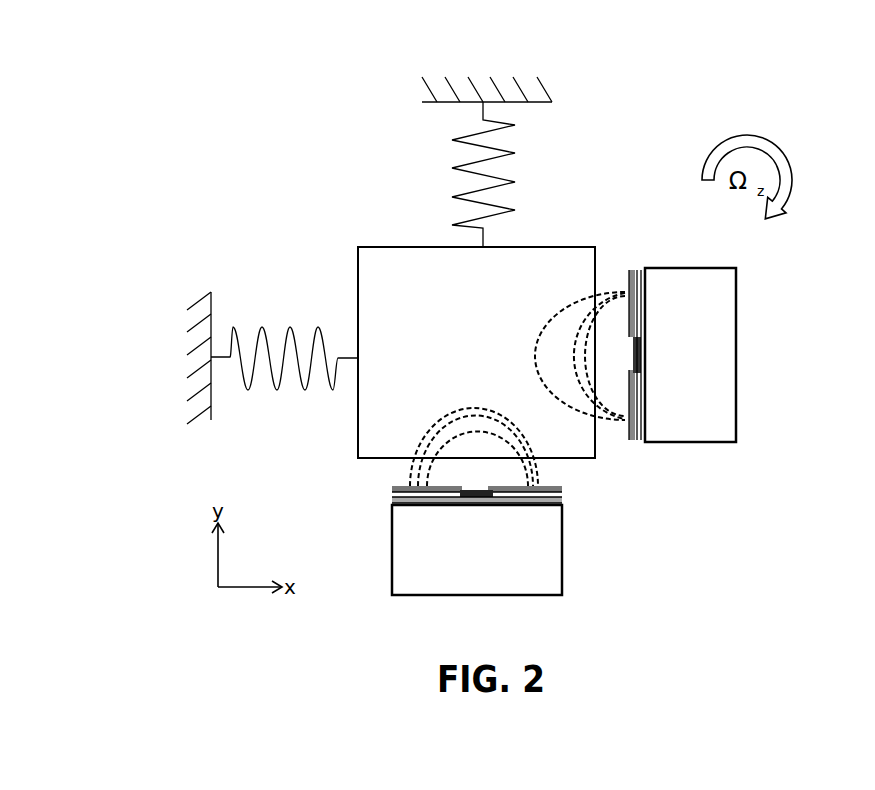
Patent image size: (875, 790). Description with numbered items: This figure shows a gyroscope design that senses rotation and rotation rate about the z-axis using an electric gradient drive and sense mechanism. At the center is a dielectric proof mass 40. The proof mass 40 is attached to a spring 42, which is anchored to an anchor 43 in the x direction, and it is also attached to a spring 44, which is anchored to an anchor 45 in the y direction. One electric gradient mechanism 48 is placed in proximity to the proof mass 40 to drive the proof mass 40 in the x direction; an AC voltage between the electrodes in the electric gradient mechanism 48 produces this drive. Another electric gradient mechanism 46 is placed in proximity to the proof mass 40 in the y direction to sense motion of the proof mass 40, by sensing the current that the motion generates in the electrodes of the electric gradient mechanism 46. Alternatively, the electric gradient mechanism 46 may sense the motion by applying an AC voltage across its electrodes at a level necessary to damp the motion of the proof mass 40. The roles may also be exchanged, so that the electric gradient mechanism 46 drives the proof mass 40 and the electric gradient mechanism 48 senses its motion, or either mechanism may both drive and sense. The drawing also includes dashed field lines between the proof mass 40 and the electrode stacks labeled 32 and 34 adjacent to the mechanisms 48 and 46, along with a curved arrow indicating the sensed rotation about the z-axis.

The side capacitive sense electrode 32 is at (612, 292).
The bottom capacitive sense electrode 34 is at (412, 467).
The dielectric proof mass 40 is at (383, 260).
The spring 42 is at (290, 327).
The anchor 43 is at (203, 300).
The spring 44 is at (513, 180).
The anchor 45 is at (548, 93).
The electric gradient mechanism 46 is at (560, 572).
The electric gradient mechanism 48 is at (733, 393).